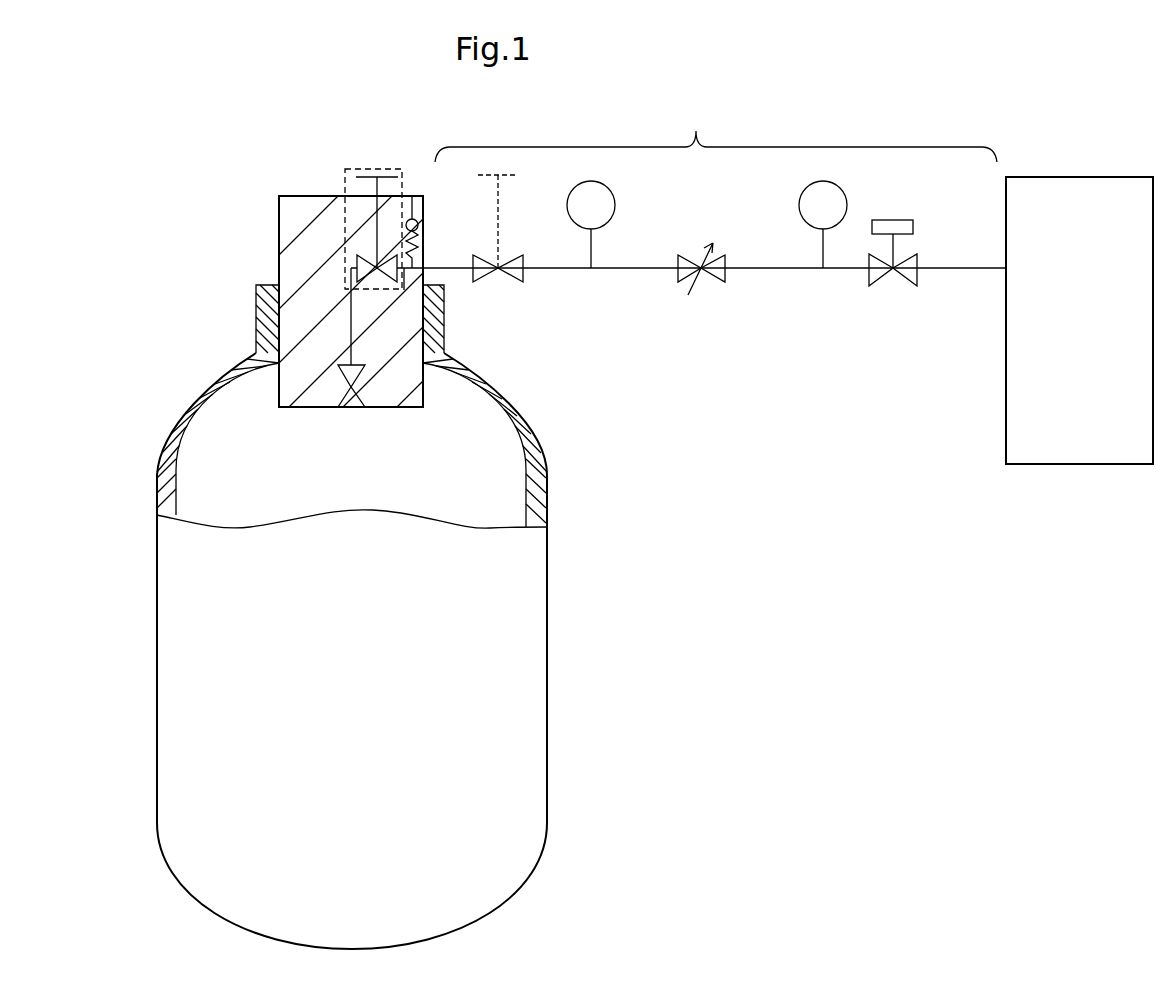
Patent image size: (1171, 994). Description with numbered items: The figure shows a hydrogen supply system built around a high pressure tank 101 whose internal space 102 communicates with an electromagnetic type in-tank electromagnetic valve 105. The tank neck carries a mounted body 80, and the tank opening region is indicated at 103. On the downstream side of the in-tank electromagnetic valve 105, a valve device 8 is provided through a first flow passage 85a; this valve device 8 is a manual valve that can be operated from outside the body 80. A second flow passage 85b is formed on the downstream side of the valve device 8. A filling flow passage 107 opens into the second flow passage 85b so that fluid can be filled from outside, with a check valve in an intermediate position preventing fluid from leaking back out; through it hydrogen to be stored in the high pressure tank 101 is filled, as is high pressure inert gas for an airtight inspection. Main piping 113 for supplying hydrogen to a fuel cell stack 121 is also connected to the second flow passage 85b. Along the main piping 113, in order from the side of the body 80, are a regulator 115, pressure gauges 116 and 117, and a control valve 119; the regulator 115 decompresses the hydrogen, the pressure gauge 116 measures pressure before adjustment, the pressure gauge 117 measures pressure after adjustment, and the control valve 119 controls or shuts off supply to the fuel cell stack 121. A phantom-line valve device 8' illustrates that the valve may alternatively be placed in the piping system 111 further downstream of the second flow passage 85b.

The valve device 8 is at (332, 233).
The valve device 8' is at (510, 228).
The body 80 is at (333, 196).
The first flow passage 85a is at (351, 324).
The second flow passage 85b is at (444, 300).
The high pressure tank 101 is at (547, 590).
The internal space 102 is at (378, 480).
The container opening 103 is at (256, 305).
The in-tank electromagnetic valve 105 is at (352, 380).
The filling flow passage 107 is at (415, 222).
The piping system 111 is at (716, 132).
The main piping 113 is at (797, 268).
The regulator 115 is at (706, 290).
The pressure gauge 116 is at (615, 205).
The pressure gauge 117 is at (799, 205).
The control valve 119 is at (913, 228).
The fuel cell stack 121 is at (1082, 177).